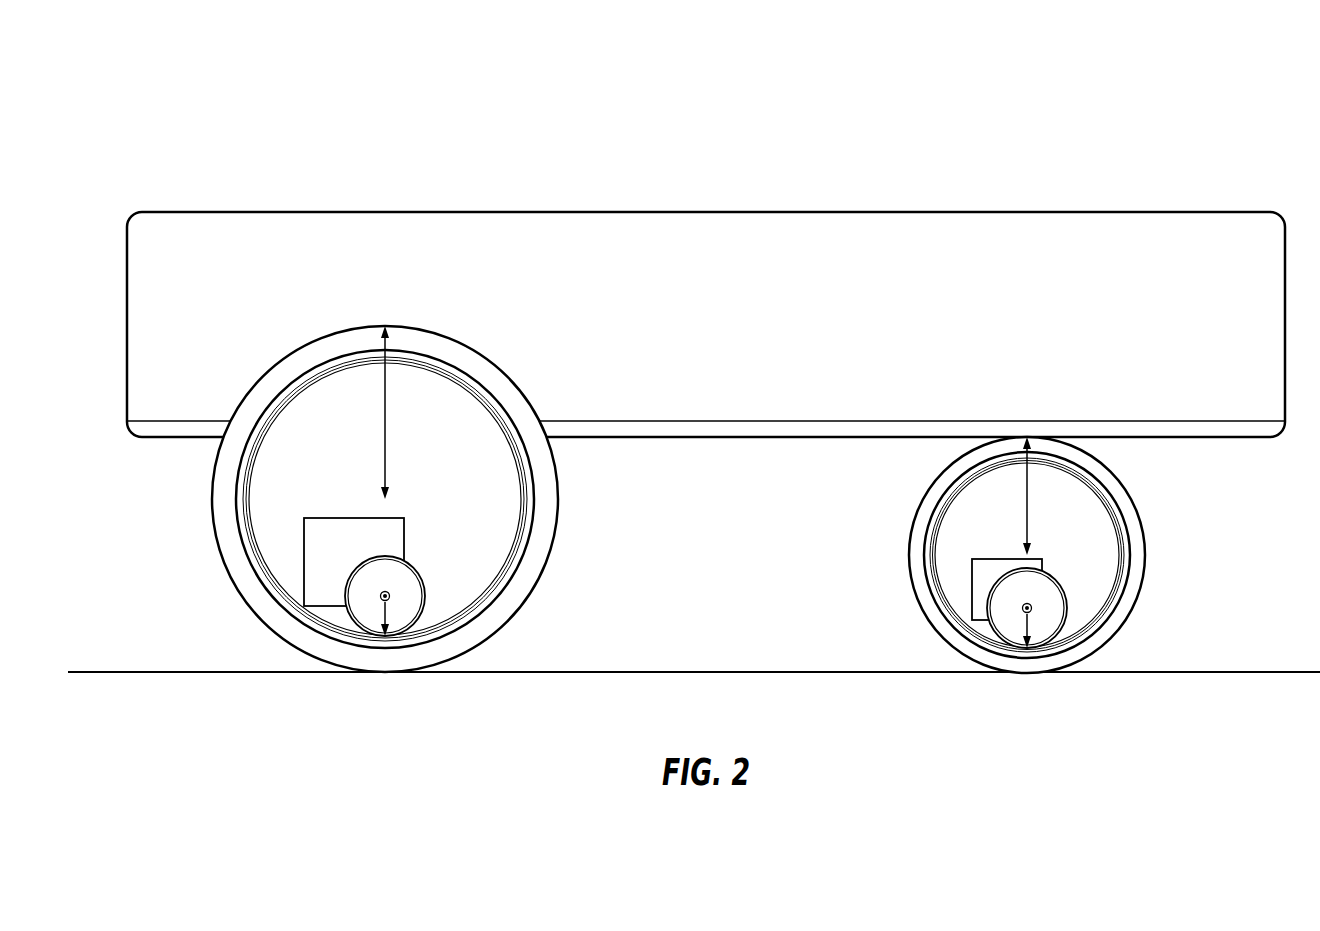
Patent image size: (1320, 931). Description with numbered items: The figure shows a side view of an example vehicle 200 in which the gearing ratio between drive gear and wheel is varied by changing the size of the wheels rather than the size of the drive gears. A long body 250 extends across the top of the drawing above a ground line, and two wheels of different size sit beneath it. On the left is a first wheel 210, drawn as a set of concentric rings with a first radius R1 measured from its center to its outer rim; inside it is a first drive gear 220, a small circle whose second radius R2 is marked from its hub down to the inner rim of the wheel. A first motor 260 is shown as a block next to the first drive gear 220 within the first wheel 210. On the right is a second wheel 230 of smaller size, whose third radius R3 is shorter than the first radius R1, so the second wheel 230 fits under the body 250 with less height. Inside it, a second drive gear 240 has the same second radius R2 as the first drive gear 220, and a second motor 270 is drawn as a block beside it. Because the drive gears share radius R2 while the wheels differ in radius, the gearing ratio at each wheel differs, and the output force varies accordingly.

The vehicle 200 is at (1224, 100).
The first wheel 210 is at (243, 606).
The first drive gear 220 is at (347, 617).
The second wheel 230 is at (920, 606).
The second drive gear 240 is at (991, 627).
The vehicle body 250 is at (217, 200).
The first motor 260 is at (294, 542).
The second motor 270 is at (962, 570).
The first radius R1 is at (385, 430).
The second radius R2 is at (386, 616).
The third radius R3 is at (1027, 495).